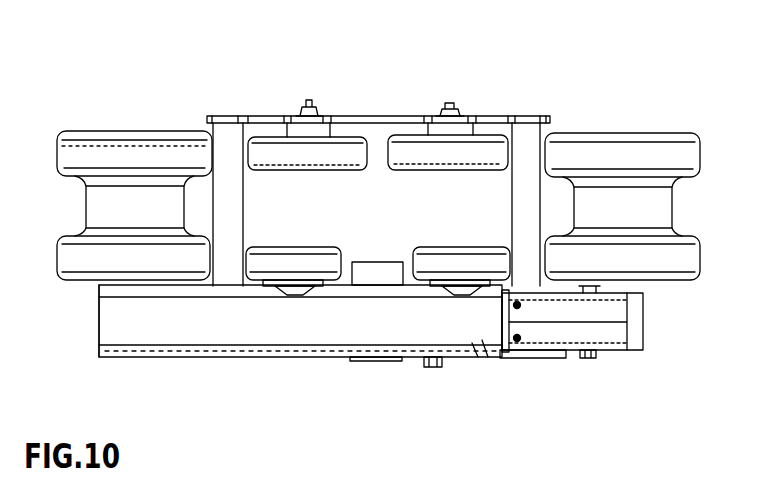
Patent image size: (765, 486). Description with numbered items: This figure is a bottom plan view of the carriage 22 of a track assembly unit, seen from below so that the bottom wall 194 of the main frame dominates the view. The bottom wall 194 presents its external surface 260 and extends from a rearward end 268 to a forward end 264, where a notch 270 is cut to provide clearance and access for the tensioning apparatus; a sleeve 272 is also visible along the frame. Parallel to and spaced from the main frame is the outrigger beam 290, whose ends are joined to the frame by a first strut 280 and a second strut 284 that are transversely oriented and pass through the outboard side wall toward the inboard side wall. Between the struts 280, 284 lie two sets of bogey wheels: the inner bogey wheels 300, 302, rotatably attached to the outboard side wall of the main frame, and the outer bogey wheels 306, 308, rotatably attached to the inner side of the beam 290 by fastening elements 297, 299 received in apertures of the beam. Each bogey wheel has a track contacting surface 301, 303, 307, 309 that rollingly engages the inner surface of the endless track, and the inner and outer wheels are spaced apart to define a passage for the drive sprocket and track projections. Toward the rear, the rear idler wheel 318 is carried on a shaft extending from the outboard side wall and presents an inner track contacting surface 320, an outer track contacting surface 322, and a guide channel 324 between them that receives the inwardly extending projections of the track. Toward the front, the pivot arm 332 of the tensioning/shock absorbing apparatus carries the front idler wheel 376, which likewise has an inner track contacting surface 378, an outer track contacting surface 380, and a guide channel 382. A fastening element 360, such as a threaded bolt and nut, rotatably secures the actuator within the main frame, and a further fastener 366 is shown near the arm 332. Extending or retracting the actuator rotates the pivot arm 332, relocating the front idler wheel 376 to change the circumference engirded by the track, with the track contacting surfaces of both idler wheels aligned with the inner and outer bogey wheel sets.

The carriage 22 is at (166, 56).
The bottom wall 194 is at (209, 346).
The external surface 260 is at (266, 338).
The forward end 264 is at (474, 344).
The rearward end 268 is at (100, 340).
The notch 270 is at (484, 344).
The sleeve 272 is at (358, 362).
The first strut 280 is at (535, 138).
The second strut 284 is at (215, 138).
The outrigger beam 290 is at (373, 115).
The fastening element 297 is at (452, 102).
The fastening element 299 is at (307, 104).
The inner bogey wheel 300 is at (430, 248).
The track contacting surface 301 is at (473, 263).
The inner bogey wheel 302 is at (324, 247).
The track contacting surface 303 is at (282, 263).
The outer bogey wheel 306 is at (484, 140).
The track contacting surface 307 is at (480, 157).
The outer bogey wheel 308 is at (266, 141).
The track contacting surface 309 is at (262, 156).
The rear idler wheel 318 is at (82, 130).
The inner track contacting surface 320 is at (72, 262).
The outer track contacting surface 322 is at (139, 152).
The guide channel 324 is at (96, 224).
The pivot arm 332 is at (634, 314).
The fastening element 360 is at (435, 367).
The bolt 366 is at (585, 360).
The front idler wheel 376 is at (645, 116).
The inner track contacting surface 378 is at (690, 263).
The outer track contacting surface 380 is at (612, 157).
The guide channel 382 is at (670, 212).